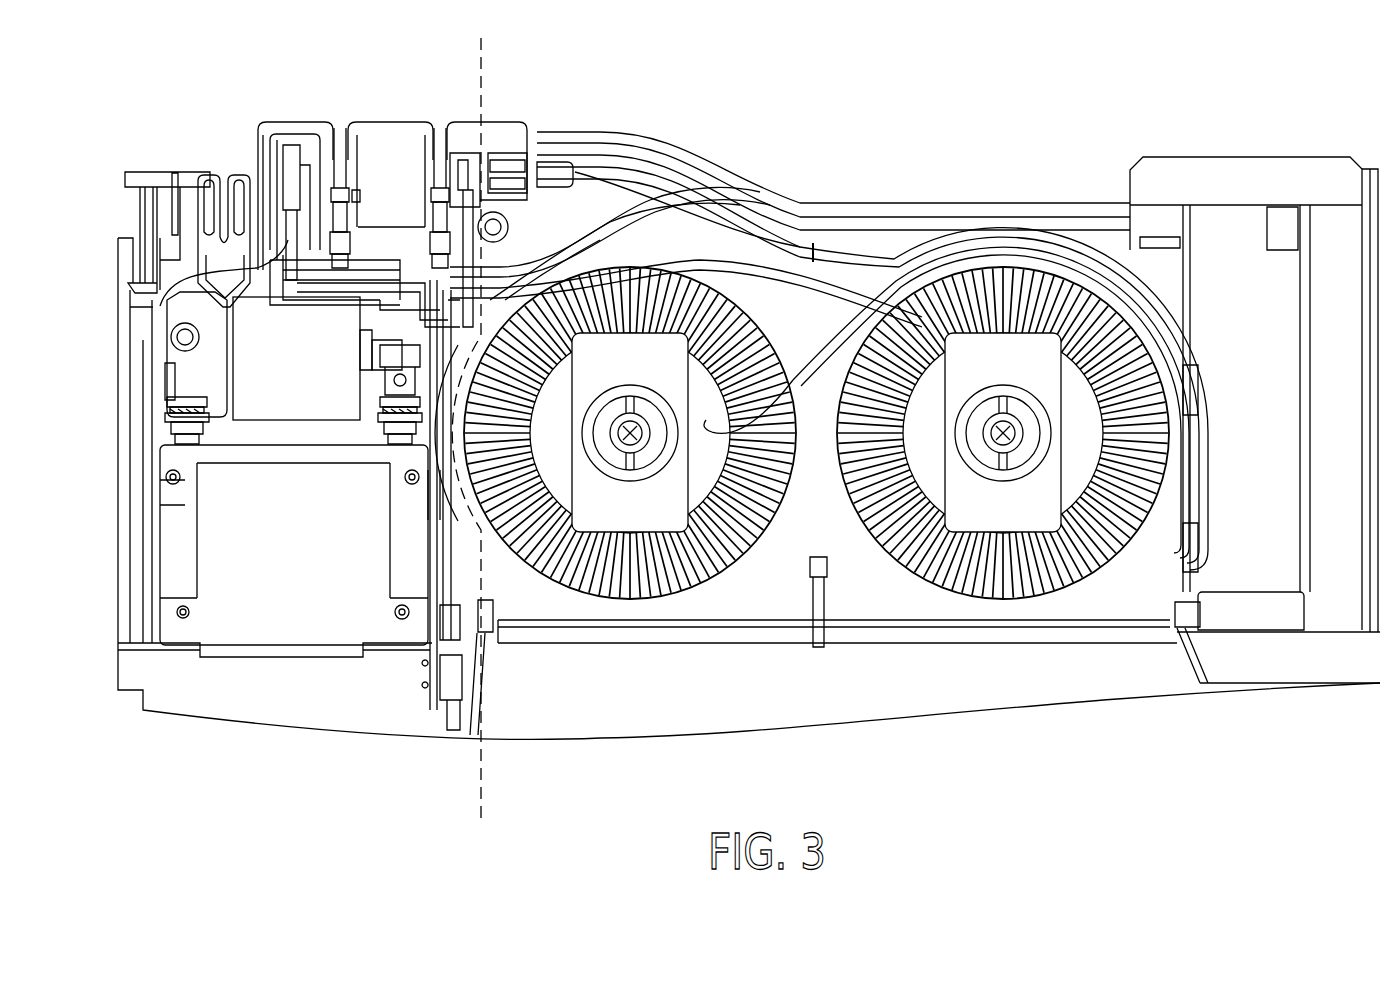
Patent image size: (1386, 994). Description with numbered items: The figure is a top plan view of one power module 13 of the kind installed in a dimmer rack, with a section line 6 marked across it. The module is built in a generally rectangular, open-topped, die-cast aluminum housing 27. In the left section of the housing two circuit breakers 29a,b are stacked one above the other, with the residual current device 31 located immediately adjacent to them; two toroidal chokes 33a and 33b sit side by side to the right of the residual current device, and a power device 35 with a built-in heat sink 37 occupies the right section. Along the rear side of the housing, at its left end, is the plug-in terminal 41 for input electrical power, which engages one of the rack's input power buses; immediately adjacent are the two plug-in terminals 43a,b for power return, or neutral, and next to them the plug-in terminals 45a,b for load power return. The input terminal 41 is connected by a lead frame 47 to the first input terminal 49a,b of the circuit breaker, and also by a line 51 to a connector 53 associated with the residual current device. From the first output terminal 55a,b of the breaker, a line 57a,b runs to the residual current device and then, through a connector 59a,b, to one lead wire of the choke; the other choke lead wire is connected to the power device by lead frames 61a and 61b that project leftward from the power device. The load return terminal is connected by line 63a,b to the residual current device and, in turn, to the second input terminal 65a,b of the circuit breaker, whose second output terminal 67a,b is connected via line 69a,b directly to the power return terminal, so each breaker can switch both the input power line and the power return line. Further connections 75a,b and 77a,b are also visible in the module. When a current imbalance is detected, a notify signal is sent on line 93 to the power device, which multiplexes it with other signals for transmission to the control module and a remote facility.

The section line 6- 6 is at (481, 38).
The power module 13 is at (758, 156).
The housing 27 is at (788, 708).
The circuit breakers 29a,b is at (318, 590).
The residual current device 31 is at (452, 540).
The toroidal inductor or choke 33a is at (1016, 575).
The toroidal inductor or choke 33b is at (636, 578).
The power device 35 is at (1249, 575).
The heat sink 37 is at (1338, 592).
The plug-in terminal for input electrical power 41 is at (238, 178).
The plug-in terminals for power return 43a,b is at (345, 140).
The plug-in terminals for load power return 45a,b is at (434, 142).
The lead frame 47 is at (200, 250).
The first input terminal of the circuit breaker 49a,b is at (172, 403).
The line 51 is at (160, 306).
The connector 53 is at (287, 152).
The first output terminal of the circuit breaker 55a,b is at (377, 408).
The line 57a,b is at (377, 363).
The connector 59a,b is at (503, 162).
The lead frame 61a is at (1196, 559).
The lead frame 61b is at (1196, 396).
The line 63a,b is at (403, 297).
The second input terminal of the circuit breaker 65a,b is at (348, 330).
The second output terminal of the circuit breaker 67a,b is at (363, 348).
The line 69a,b is at (356, 190).
The connector 75a,b is at (387, 355).
The connector 77a,b is at (433, 503).
The line 93 is at (570, 249).